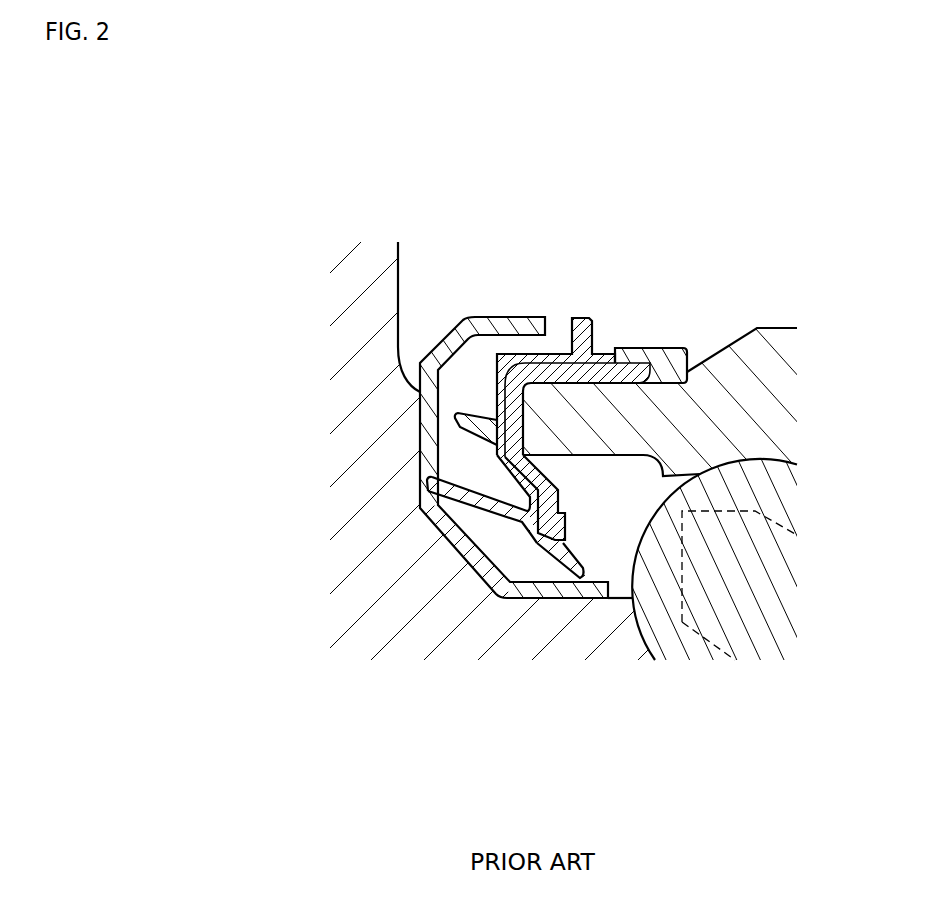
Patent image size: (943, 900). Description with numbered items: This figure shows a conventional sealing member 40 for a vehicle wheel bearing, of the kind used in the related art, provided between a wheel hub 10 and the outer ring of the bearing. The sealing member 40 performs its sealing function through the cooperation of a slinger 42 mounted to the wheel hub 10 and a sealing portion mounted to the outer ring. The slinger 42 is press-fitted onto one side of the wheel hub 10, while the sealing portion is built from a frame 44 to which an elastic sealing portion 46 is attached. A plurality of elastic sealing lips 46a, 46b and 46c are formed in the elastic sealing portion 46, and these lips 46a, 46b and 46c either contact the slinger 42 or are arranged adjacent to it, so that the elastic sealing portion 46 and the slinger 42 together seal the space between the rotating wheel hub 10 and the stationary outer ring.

The wheel hub 10 is at (367, 485).
The sealing member 40 is at (560, 442).
The slinger 42 is at (430, 420).
The frame 44 is at (603, 340).
The elastic sealing portion 46 is at (508, 502).
The elastic sealing lip 46a is at (487, 512).
The elastic sealing lip 46b is at (573, 575).
The elastic sealing lip 46c is at (463, 420).